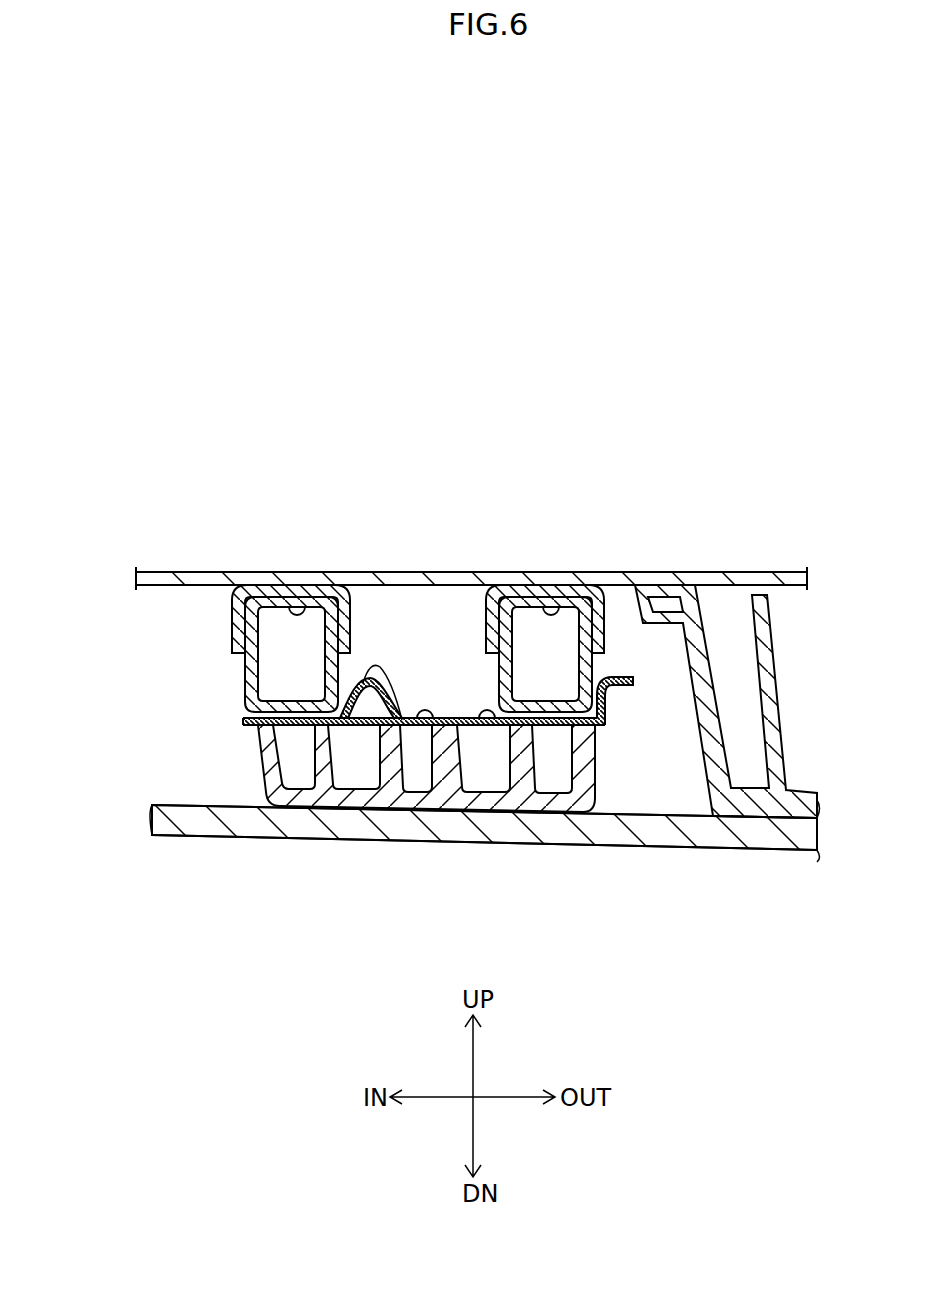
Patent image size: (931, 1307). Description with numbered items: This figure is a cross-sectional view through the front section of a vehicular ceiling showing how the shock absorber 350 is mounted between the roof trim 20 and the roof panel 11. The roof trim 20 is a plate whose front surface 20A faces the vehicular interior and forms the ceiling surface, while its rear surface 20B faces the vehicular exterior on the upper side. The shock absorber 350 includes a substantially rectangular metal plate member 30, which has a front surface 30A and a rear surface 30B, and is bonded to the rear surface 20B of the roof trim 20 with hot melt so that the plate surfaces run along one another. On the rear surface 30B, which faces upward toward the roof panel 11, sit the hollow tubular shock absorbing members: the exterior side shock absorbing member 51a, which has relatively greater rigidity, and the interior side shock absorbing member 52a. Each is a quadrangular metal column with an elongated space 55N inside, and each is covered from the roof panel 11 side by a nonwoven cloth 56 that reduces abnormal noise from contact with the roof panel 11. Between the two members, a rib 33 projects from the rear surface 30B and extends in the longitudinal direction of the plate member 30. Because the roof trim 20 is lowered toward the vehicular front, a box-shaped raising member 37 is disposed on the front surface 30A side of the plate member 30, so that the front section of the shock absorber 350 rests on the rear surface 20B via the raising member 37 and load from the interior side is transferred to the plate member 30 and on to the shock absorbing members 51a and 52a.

The roof panel 11 is at (757, 572).
The roof trim 20 is at (444, 851).
The front surface 20A is at (238, 837).
The rear surface 20B is at (173, 805).
The plate member 30 is at (438, 794).
The front surface 30A is at (552, 724).
The rear surface 30B is at (498, 724).
The rib 33 is at (440, 724).
The raising member 37 is at (253, 792).
The shock absorber 350 is at (189, 677).
The exterior side shock absorbing member 51a is at (535, 598).
The interior side shock absorbing member 52a is at (282, 598).
The elongated space 55N is at (307, 607).
The nonwoven cloth 56 is at (352, 594).